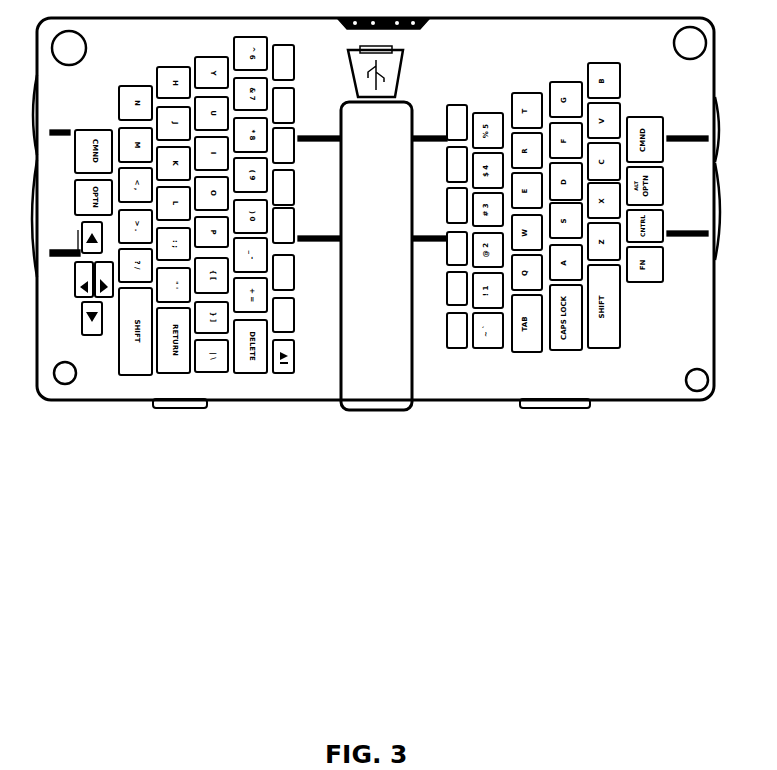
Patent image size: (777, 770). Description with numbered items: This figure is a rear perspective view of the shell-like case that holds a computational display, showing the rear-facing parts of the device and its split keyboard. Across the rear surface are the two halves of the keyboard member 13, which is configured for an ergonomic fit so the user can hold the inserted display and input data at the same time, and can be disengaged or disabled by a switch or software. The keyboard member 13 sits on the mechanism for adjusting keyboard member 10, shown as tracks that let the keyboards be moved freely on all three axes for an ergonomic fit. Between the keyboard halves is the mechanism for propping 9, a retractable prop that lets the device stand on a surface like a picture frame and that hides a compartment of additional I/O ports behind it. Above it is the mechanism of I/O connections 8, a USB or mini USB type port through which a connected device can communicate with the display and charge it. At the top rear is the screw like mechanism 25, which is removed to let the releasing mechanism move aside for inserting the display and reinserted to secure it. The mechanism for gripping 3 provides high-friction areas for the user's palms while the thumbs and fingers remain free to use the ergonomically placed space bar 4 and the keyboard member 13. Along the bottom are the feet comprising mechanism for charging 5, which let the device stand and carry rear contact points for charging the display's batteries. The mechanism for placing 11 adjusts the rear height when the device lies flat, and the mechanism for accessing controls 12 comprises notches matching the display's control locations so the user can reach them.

The mechanism for gripping 3 is at (718, 188).
The space bar 4 is at (720, 108).
The feet comprising mechanism for charging 5 is at (567, 406).
The mechanism of I/O connections 8 is at (405, 50).
The mechanism for propping 9 is at (376, 213).
The mechanism for adjusting keyboard member 10 is at (707, 130).
The mechanism for placing 11 is at (676, 45).
The mechanism for accessing controls 12 is at (37, 327).
The keyboard member 13 is at (447, 287).
The screw like mechanism 25 is at (343, 25).